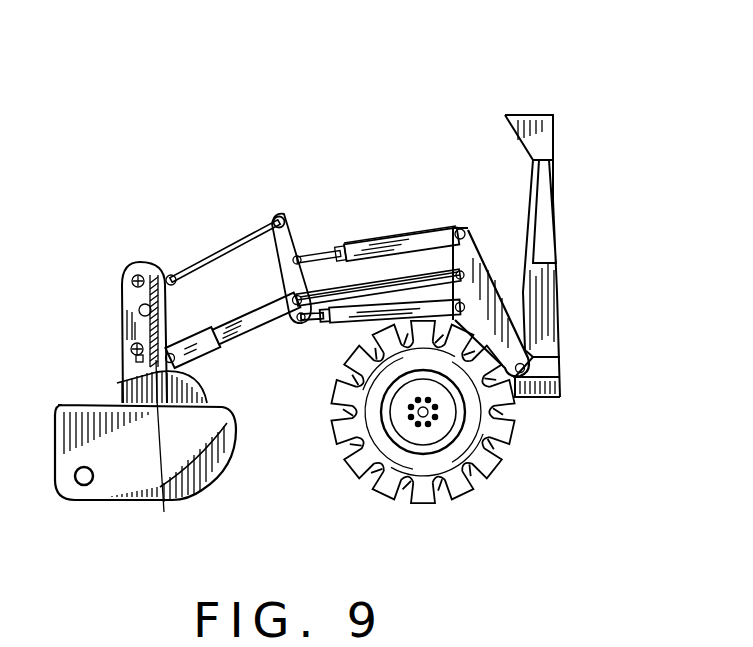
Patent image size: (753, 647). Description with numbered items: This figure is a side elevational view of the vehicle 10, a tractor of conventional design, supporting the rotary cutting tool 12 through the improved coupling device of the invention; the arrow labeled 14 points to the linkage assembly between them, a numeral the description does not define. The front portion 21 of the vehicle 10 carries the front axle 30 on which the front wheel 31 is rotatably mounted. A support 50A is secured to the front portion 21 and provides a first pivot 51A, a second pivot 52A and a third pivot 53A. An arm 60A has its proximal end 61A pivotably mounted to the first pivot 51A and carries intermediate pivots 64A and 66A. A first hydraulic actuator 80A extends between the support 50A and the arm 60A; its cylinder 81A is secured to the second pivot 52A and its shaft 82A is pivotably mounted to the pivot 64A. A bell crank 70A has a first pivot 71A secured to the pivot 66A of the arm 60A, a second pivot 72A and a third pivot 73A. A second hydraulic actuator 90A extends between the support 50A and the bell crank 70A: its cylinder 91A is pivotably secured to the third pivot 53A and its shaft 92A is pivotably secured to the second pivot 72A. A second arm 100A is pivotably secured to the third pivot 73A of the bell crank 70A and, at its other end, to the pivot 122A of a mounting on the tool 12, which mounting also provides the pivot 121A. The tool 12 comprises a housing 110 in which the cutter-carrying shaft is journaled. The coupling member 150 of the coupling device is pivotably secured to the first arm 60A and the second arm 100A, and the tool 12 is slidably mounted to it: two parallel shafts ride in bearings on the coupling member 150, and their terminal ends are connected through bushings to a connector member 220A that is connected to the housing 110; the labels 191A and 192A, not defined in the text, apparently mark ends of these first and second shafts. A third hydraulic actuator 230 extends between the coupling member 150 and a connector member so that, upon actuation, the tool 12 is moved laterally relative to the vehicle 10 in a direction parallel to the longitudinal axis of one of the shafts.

The vehicle 10 is at (568, 78).
The loader assembly 14 is at (204, 100).
The rotary cutting tool 12 is at (83, 458).
The housing 110 is at (98, 490).
The bucket back plate edge 192A is at (181, 453).
The pivot 121A is at (225, 415).
The connector member 220A is at (127, 393).
The mounting plate 191A is at (136, 268).
The third hydraulic actuator 230 is at (140, 312).
The coupling member 150 is at (133, 327).
The pivot 122A is at (169, 284).
The second arm 100A is at (238, 245).
The bell crank 70A is at (270, 221).
The third pivot 73A is at (290, 258).
The second pivot 72A is at (285, 262).
The first pivot 71A is at (292, 298).
The shaft 92A is at (318, 252).
The first hydraulic actuator 80A is at (362, 282).
The arm 60A is at (350, 272).
The cylinder 81A is at (377, 290).
The cylinder 91A is at (432, 236).
The pivot 66A is at (292, 308).
The proximal end 61A is at (410, 298).
The pivot 64A is at (306, 322).
The second hydraulic actuator 90A is at (445, 237).
The third pivot 53A is at (468, 236).
The first pivot 51A is at (464, 277).
The second pivot 52A is at (465, 308).
The support 50A is at (508, 332).
The front portion 21 is at (540, 400).
The shaft 82A is at (340, 338).
The front wheel 31 is at (388, 483).
The front axle 30 is at (423, 428).